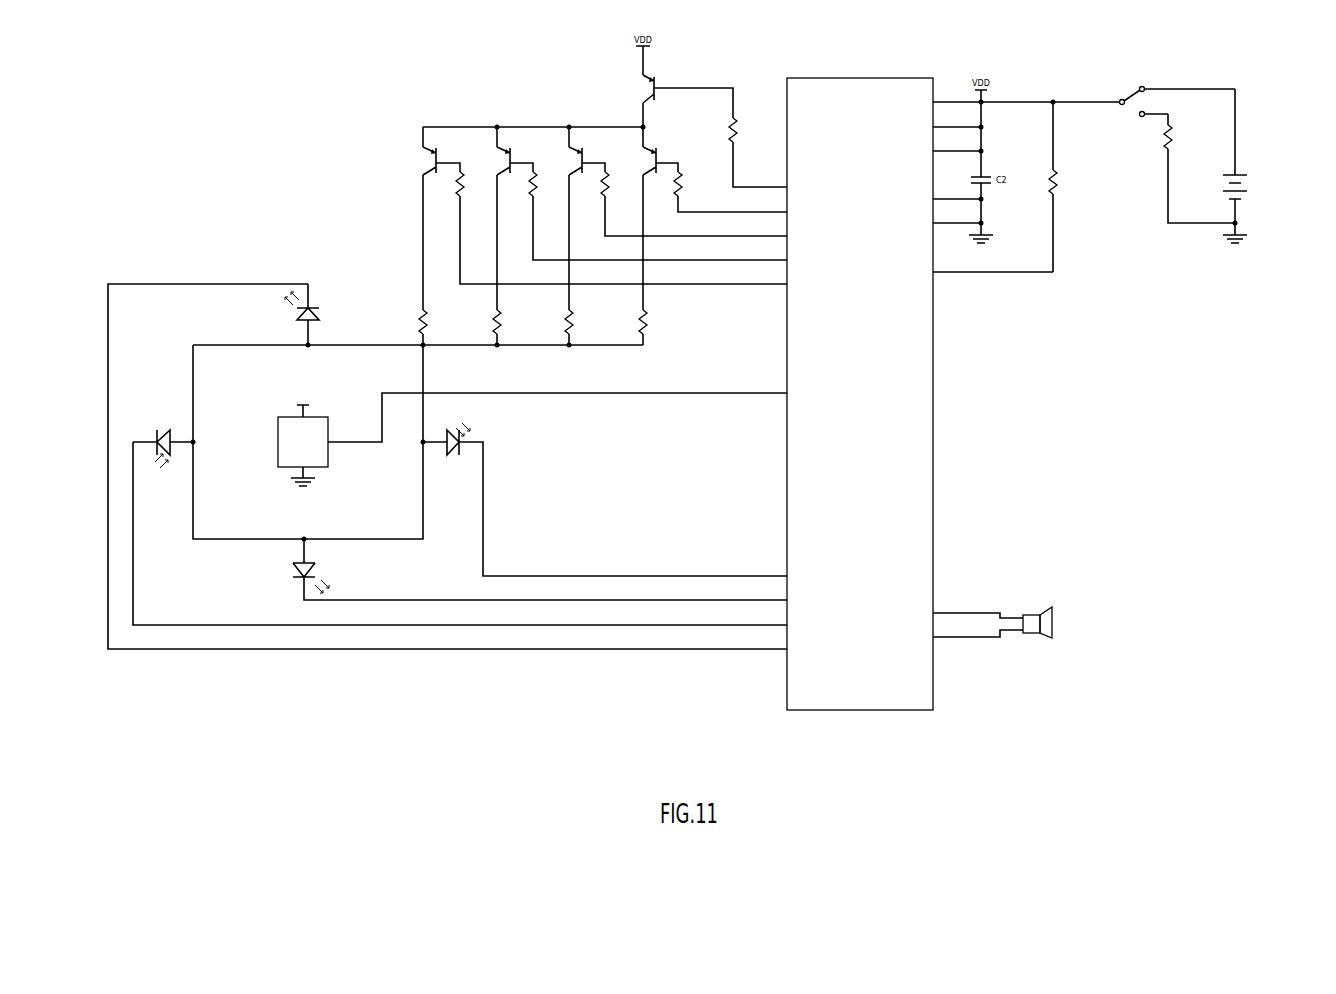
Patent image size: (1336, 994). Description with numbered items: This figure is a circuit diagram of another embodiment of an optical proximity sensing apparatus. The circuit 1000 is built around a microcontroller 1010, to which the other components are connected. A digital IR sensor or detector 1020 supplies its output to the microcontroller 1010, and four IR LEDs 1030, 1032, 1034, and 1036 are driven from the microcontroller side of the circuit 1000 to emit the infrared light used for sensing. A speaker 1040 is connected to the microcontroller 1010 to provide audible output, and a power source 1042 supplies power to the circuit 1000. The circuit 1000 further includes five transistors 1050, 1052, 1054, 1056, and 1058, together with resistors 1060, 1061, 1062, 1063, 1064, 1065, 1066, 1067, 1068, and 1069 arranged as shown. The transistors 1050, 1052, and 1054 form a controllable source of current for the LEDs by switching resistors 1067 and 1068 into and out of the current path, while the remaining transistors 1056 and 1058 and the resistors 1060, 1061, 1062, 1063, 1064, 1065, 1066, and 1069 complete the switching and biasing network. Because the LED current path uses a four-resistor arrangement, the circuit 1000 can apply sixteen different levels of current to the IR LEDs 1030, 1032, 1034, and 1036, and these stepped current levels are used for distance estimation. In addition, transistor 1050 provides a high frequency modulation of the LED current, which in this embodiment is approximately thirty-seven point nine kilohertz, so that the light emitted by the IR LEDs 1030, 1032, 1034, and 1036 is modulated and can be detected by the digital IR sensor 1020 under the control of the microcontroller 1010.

The circuit 1000 is at (1215, 75).
The microcontroller 1010 is at (933, 531).
The digital IR sensor 1020 is at (270, 442).
The IR LED 1030 is at (482, 424).
The IR LED 1032 is at (343, 288).
The IR LED 1034 is at (150, 410).
The IR LED 1036 is at (277, 576).
The speaker 1040 is at (1063, 626).
The power source 1042 is at (1263, 215).
The transistor 1050 is at (657, 73).
The transistor 1052 is at (441, 144).
The transistor 1054 is at (516, 144).
The transistor 1056 is at (583, 144).
The transistor 1058 is at (657, 143).
The resistor 1060 is at (457, 196).
The resistor 1061 is at (530, 196).
The resistor 1062 is at (602, 196).
The resistor 1063 is at (675, 196).
The resistor 1064 is at (427, 323).
The resistor 1065 is at (500, 323).
The resistor 1066 is at (572, 323).
The resistor 1067 is at (644, 323).
The resistor 1068 is at (737, 143).
The resistor 1069 is at (1048, 190).